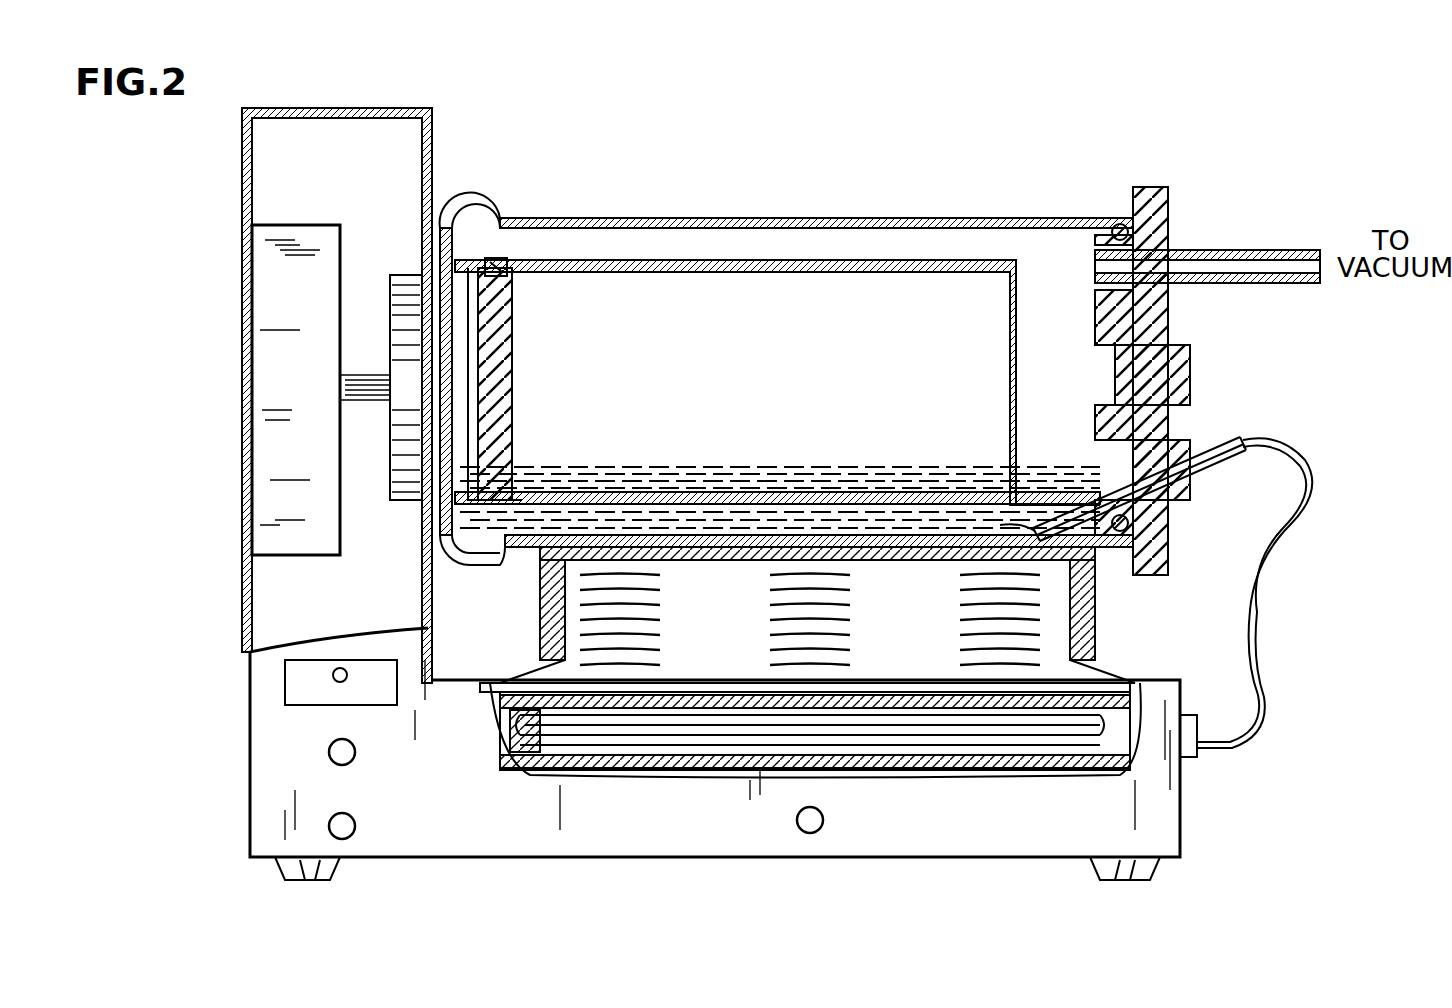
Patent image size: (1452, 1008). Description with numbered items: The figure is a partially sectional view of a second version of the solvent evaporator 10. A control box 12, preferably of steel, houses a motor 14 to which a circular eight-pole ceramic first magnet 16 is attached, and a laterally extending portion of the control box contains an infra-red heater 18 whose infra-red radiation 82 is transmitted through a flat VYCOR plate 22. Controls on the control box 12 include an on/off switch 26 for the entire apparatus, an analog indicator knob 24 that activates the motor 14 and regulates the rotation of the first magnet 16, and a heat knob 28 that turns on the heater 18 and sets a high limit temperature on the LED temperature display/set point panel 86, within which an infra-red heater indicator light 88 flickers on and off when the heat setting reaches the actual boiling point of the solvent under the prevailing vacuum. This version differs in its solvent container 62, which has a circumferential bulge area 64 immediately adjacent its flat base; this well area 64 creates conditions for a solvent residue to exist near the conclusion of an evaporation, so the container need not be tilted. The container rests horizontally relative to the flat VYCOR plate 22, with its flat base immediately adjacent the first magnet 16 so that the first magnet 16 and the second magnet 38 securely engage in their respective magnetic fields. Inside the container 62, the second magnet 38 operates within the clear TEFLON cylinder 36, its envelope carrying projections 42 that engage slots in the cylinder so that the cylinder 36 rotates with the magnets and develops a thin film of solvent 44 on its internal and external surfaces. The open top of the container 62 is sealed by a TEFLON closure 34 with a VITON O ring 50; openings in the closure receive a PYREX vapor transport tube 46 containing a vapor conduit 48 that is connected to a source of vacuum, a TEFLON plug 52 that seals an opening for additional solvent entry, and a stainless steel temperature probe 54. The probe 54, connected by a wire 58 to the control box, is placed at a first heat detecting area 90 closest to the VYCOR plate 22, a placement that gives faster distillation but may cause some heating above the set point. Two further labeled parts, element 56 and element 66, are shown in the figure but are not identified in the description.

The solvent evaporator 10 is at (730, 158).
The control box 12 is at (354, 108).
The motor 14 is at (340, 525).
The first magnet 16 is at (392, 278).
The infra-red heater 18 is at (1058, 775).
The flat VYCOR plate 22 is at (785, 683).
The analog indicator knob 24 is at (352, 815).
The on/off switch 26 is at (818, 812).
The heat knob 28 is at (329, 748).
The closure 34 is at (1168, 210).
The cylinder 36 is at (685, 260).
The second magnet 38 is at (512, 403).
The projections 42 is at (505, 260).
The solvent 44 is at (930, 462).
The vapor transport tube 46 is at (1178, 252).
The vapor conduit 48 is at (1318, 265).
The VITON O ring 50 is at (1115, 225).
The TEFLON plug 52 is at (1190, 385).
The temperature probe 54 is at (1228, 438).
The lower block 56 is at (1185, 505).
The wire 58 is at (1312, 478).
The solvent container 62 is at (898, 218).
The bulge area 64 is at (490, 565).
The insulating block 66 is at (1095, 620).
The infra-red radiation 82 is at (720, 605).
The LED temperature display/set point panel 86 is at (370, 660).
The infra-red heater indicator light 88 is at (338, 668).
The first heat detecting area 90 is at (1000, 525).